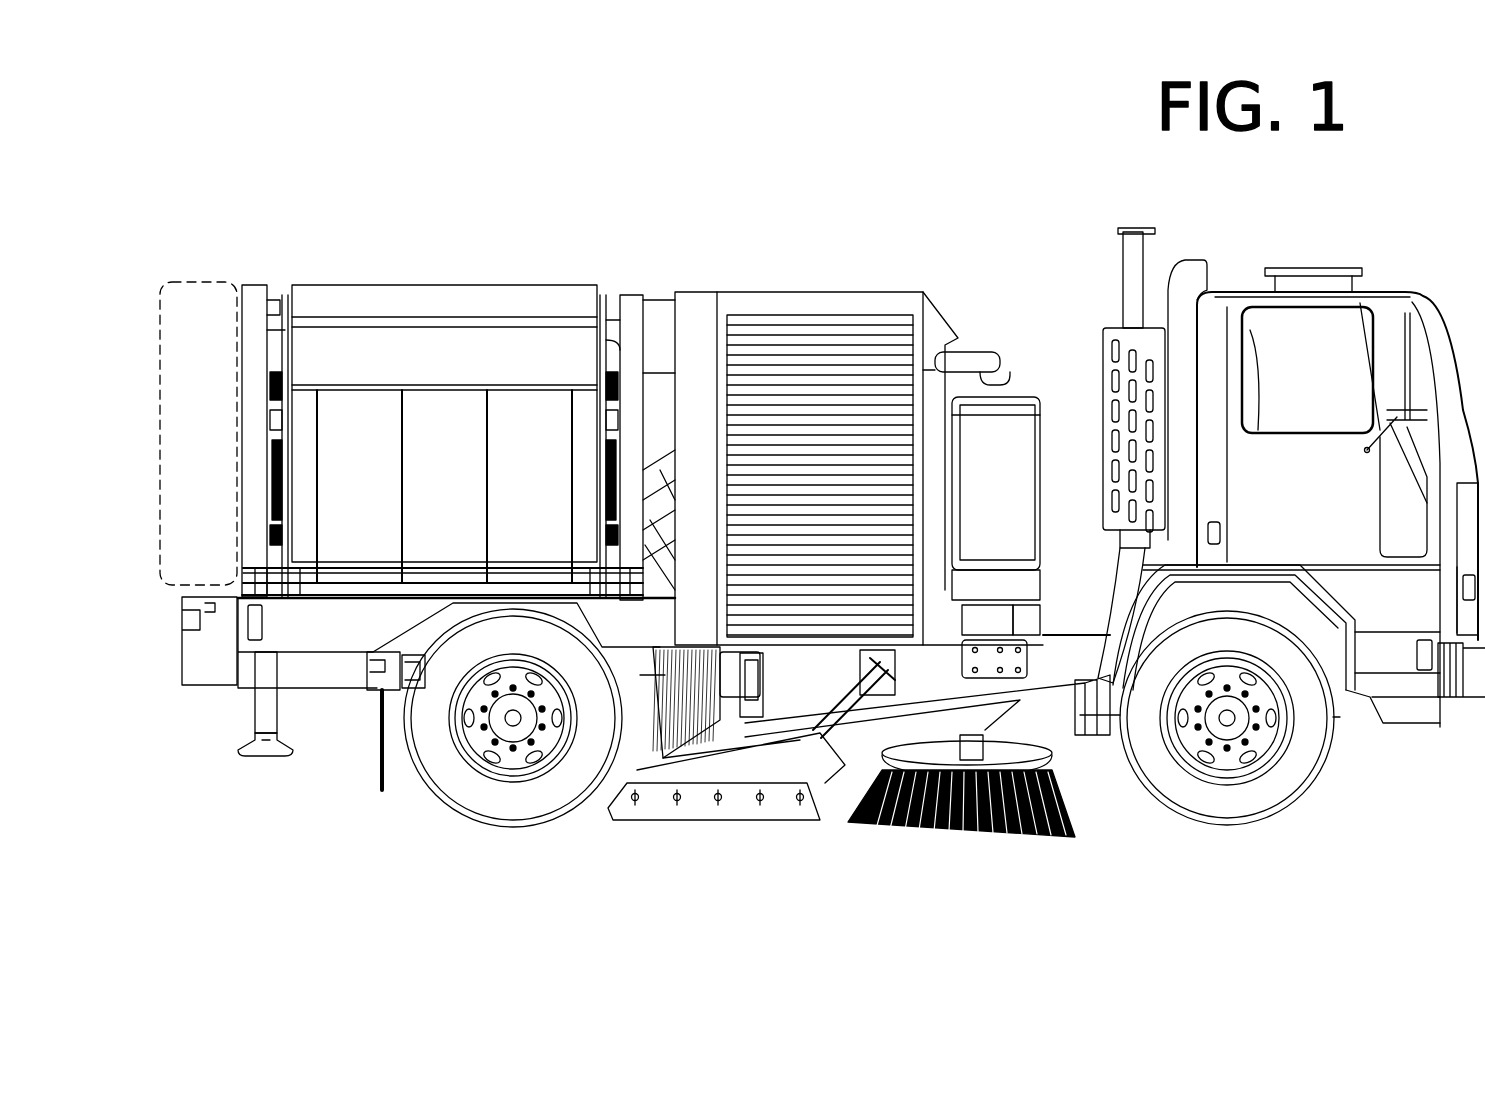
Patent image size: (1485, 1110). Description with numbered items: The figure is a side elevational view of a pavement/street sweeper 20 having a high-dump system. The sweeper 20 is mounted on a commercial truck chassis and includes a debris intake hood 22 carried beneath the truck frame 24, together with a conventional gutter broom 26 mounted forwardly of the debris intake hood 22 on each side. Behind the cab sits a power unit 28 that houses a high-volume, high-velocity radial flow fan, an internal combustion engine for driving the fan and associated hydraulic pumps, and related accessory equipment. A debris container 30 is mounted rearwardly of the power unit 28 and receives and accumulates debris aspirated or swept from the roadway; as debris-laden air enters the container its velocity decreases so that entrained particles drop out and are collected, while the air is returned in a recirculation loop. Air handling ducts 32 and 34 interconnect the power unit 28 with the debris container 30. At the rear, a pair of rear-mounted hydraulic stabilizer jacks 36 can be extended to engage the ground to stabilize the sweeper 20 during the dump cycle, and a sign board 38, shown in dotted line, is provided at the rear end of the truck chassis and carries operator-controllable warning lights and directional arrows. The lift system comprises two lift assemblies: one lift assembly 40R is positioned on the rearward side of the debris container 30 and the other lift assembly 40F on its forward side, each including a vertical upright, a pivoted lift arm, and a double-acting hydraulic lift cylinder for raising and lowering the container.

The sweeper 20 is at (843, 140).
The debris intake hood 22 is at (658, 825).
The truck frame 24 is at (312, 682).
The gutter broom 26 is at (1027, 842).
The power unit 28 is at (668, 275).
The debris container 30 is at (410, 285).
The air handling duct 32 is at (655, 370).
The air handling duct 34 is at (653, 543).
The hydraulic stabilizer jack 36 is at (260, 692).
The sign board 38 is at (195, 320).
The rearward lift assembly 40R is at (253, 283).
The forward lift assembly 40F is at (632, 295).